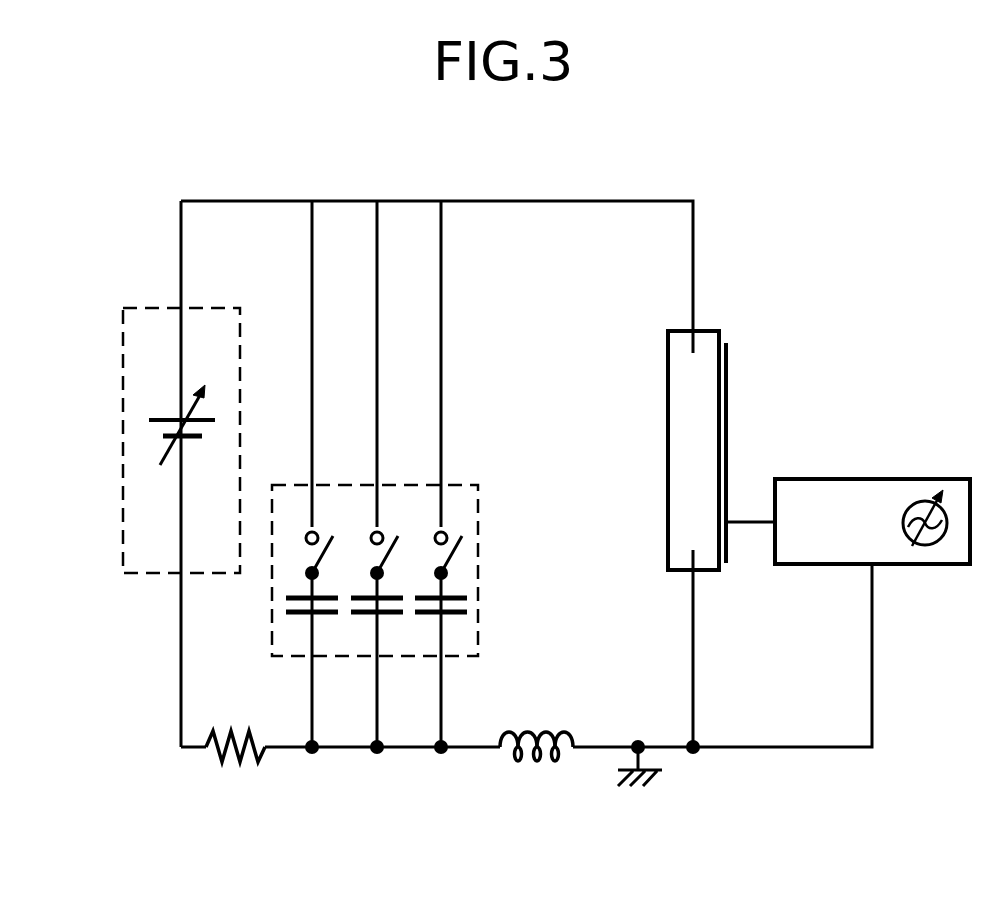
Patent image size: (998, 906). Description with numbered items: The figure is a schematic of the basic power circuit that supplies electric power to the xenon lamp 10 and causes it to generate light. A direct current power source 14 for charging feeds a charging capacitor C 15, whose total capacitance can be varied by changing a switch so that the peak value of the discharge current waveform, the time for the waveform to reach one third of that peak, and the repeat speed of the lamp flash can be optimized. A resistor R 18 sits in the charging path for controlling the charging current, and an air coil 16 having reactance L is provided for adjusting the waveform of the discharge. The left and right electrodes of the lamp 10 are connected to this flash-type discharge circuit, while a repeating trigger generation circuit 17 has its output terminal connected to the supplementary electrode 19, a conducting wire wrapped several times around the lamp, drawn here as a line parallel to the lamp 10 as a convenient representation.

The xenon lamp 10 is at (668, 413).
The direct current power source 14 is at (144, 557).
The capacitor C for charging 15 is at (478, 483).
The air coil 16 is at (530, 758).
The repeating trigger generation circuit 17 is at (841, 479).
The resistor R 18 is at (233, 766).
The supplementary electrode 19 is at (727, 418).